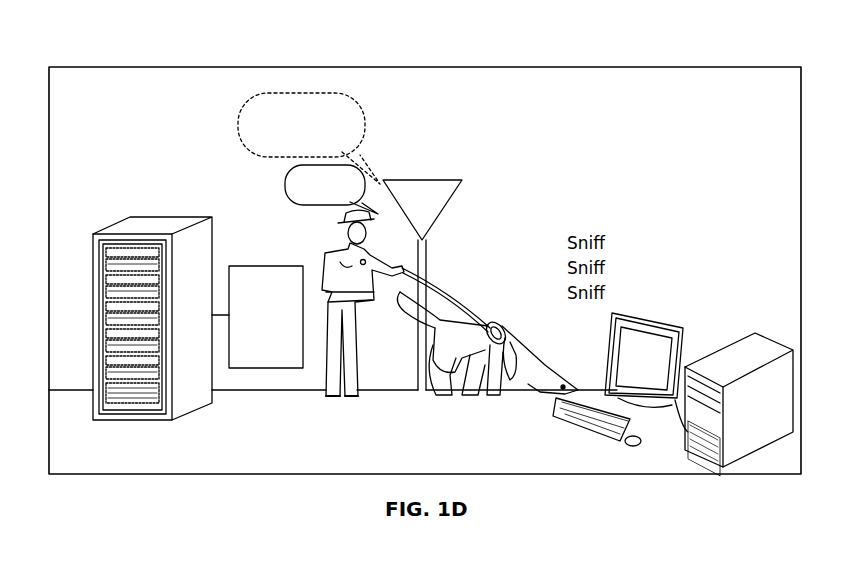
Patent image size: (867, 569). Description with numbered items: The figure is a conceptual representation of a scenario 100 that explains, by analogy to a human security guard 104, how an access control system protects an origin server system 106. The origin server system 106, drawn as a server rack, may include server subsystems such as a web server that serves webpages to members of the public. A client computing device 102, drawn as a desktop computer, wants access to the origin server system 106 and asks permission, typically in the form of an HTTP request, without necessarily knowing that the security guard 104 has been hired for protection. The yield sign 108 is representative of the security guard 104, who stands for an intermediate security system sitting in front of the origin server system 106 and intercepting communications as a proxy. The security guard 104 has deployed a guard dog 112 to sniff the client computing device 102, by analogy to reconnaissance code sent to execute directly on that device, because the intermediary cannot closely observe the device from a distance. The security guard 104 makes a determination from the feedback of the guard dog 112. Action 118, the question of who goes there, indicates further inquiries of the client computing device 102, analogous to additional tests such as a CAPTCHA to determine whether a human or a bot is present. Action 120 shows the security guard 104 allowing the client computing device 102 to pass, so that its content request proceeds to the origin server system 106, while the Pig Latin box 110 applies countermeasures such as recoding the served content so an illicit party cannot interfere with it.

The scenario 100 is at (722, 53).
The client computing device 102 is at (655, 367).
The security guard 104 is at (325, 258).
The origin server system 106 is at (113, 224).
The yield sign 108 is at (447, 179).
The pig latin box (translator) 110 is at (257, 369).
The guard dog 112 is at (522, 342).
The action 118 is at (234, 126).
The action 120 is at (284, 188).